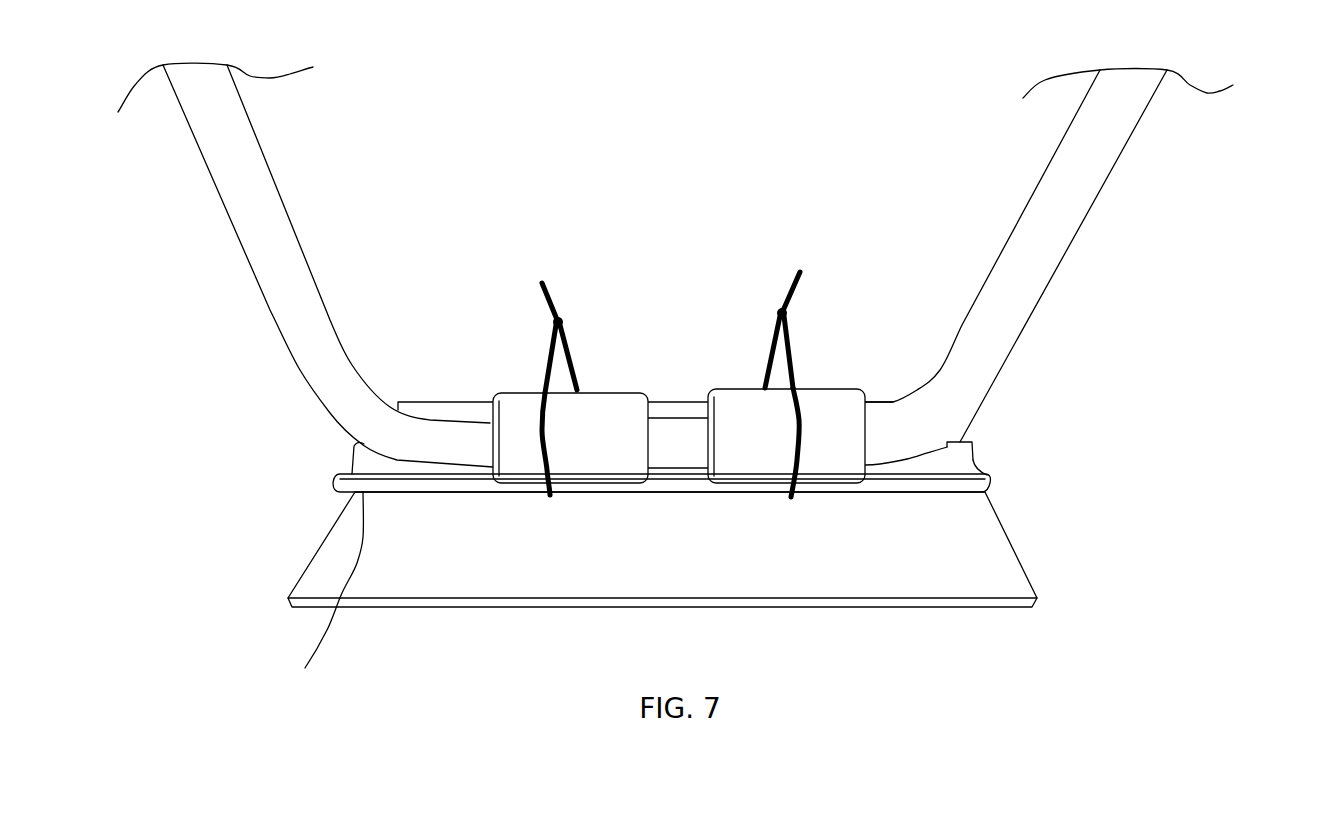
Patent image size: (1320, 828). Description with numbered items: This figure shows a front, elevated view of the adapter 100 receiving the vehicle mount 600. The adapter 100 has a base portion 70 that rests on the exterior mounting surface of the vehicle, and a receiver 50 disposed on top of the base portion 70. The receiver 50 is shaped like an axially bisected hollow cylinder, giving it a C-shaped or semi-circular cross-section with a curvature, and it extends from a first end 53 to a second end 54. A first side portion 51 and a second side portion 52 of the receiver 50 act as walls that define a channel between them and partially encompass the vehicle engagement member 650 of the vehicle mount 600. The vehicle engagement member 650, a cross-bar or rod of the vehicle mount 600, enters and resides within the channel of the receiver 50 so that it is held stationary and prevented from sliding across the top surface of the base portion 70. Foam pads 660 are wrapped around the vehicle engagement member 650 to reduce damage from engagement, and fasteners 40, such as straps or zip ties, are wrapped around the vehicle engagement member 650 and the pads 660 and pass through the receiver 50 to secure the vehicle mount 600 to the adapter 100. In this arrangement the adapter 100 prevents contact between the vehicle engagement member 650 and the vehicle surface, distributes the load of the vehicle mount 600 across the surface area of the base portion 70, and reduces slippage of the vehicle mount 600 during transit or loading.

The adapter 100 is at (262, 513).
The vehicle mount 600 is at (1073, 200).
The vehicle engagement member 650 is at (683, 430).
The foam pads 660 is at (598, 420).
The fastener 40 is at (545, 365).
The receiver 50 is at (953, 470).
The first side portion 51 is at (957, 450).
The second side portion 52 is at (329, 596).
The first end 53 is at (314, 450).
The second end 54 is at (998, 437).
The base portion 70 is at (955, 557).